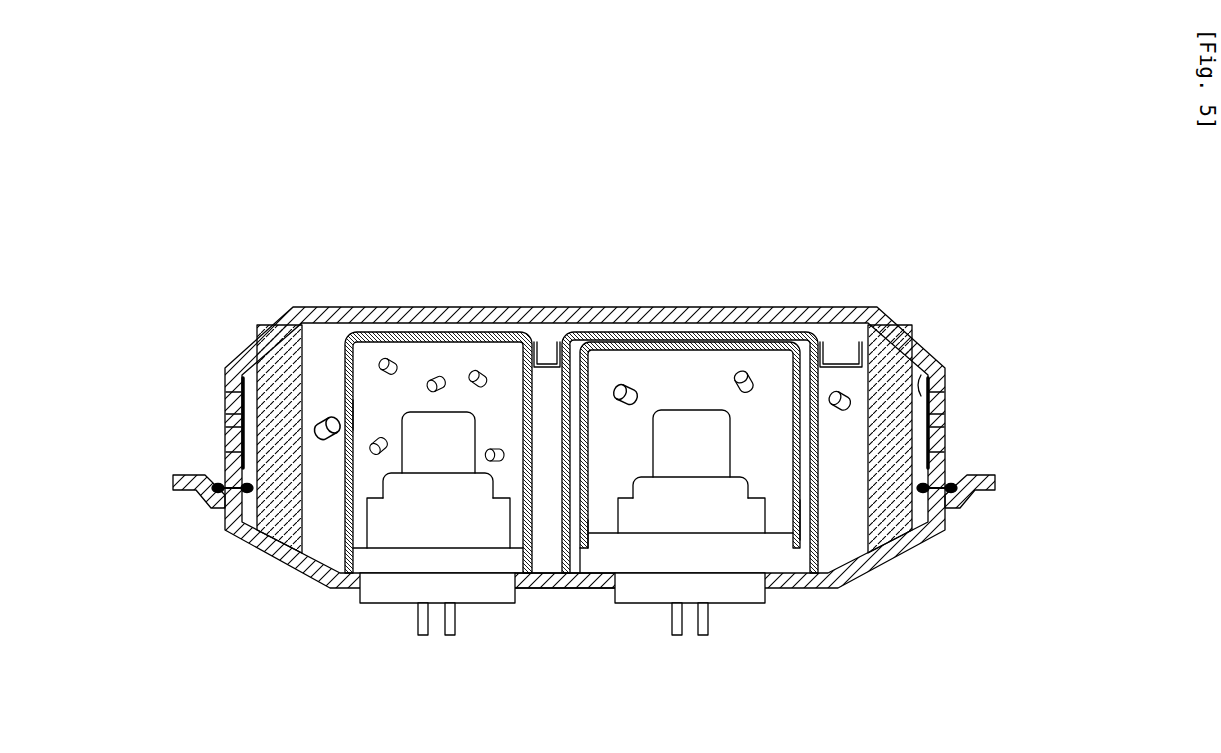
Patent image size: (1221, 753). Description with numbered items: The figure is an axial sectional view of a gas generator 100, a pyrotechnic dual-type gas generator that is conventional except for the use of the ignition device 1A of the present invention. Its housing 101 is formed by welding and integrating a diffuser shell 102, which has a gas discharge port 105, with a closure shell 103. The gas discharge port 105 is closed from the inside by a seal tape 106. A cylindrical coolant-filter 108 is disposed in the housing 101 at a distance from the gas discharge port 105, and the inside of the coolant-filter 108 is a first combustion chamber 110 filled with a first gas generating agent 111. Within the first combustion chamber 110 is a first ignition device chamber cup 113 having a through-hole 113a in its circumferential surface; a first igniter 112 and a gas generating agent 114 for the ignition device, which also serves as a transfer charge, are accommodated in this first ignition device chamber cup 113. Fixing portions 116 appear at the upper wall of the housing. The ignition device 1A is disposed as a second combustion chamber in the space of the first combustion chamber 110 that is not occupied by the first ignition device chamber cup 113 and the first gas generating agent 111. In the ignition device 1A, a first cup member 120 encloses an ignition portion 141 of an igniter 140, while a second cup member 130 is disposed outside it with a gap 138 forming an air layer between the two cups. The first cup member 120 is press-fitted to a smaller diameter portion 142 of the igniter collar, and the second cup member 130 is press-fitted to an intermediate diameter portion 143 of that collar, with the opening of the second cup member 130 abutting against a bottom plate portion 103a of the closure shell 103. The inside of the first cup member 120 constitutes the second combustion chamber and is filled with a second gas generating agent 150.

The gas generator 100 is at (689, 285).
The housing 101 is at (1072, 430).
The diffuser shell 102 is at (933, 510).
The closure shell 103 is at (938, 526).
The bottom plate portion 103a is at (545, 583).
The gas discharge port 105 is at (937, 405).
The seal tape 106 is at (922, 378).
The coolant-filter 108 is at (282, 392).
The first combustion chamber 110 is at (322, 545).
The first gas generating agent 111 is at (325, 442).
The first igniter 112 is at (380, 608).
The first ignition device chamber cup 113 is at (372, 332).
The through-hole 113a is at (352, 410).
The gas generating agent for an ignition device 114 is at (442, 375).
The fixing portion 116 is at (549, 362).
The first cup member 120 is at (778, 345).
The second cup member 130 is at (608, 342).
The gap 138 is at (803, 525).
The igniter 140 is at (633, 608).
The ignition portion 141 is at (691, 443).
The smaller diameter portion 142 is at (597, 548).
The intermediate diameter portion 143 is at (581, 558).
The second gas generating agent 150 is at (632, 393).
The ignition device 1A is at (824, 509).